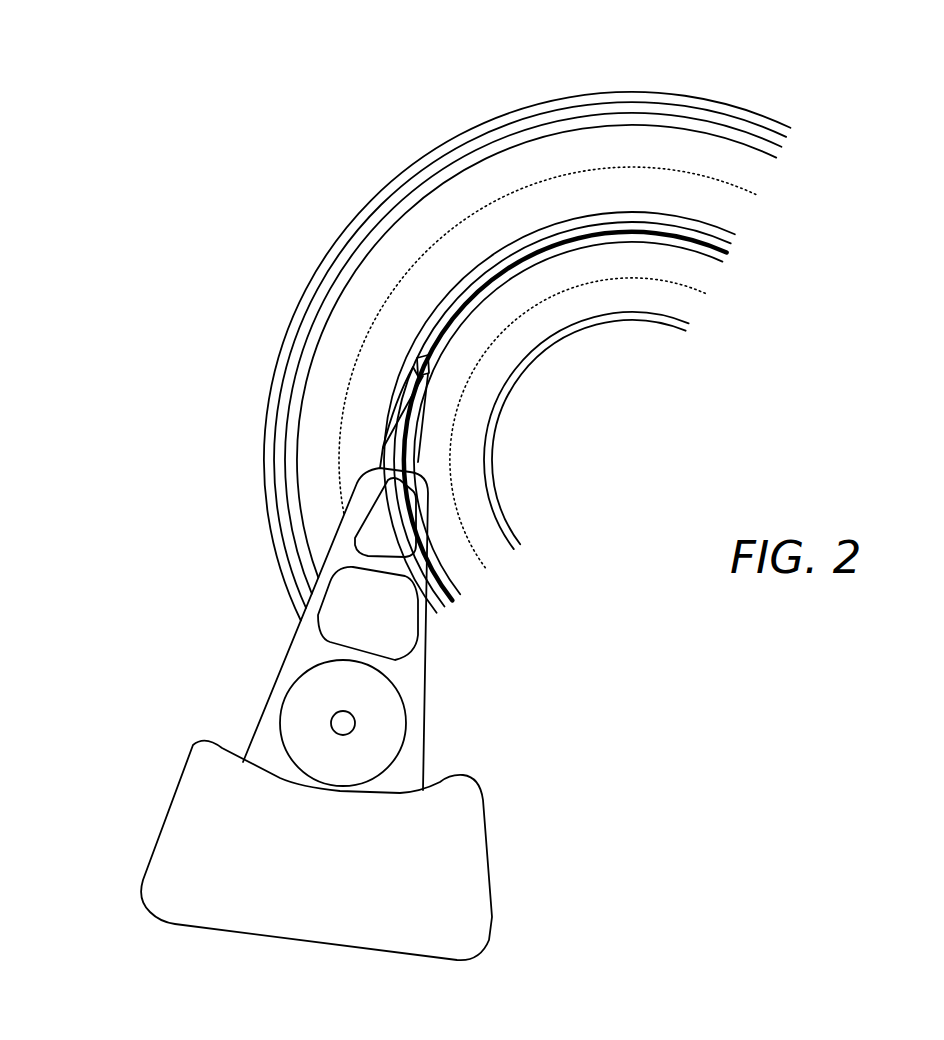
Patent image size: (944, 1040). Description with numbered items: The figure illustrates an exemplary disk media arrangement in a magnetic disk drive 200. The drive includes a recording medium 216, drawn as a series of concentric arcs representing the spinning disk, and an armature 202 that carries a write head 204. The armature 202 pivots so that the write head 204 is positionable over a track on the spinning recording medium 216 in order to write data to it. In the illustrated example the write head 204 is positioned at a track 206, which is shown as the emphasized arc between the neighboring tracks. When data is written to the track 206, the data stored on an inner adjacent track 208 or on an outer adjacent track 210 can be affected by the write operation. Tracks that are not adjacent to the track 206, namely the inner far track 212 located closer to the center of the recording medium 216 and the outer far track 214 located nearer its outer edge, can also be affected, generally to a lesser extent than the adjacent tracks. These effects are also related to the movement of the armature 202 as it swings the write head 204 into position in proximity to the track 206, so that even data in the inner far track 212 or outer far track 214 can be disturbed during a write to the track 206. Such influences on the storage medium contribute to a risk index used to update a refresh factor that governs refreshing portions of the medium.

The magnetic disk drive 200 is at (348, 96).
The armature 202 is at (193, 814).
The write head 204 is at (418, 360).
The track 206 is at (458, 310).
The inner adjacent track 208 is at (510, 273).
The outer adjacent track 210 is at (437, 315).
The inner far track 212 is at (495, 425).
The outer far track 214 is at (300, 413).
The recording medium 216 is at (566, 95).